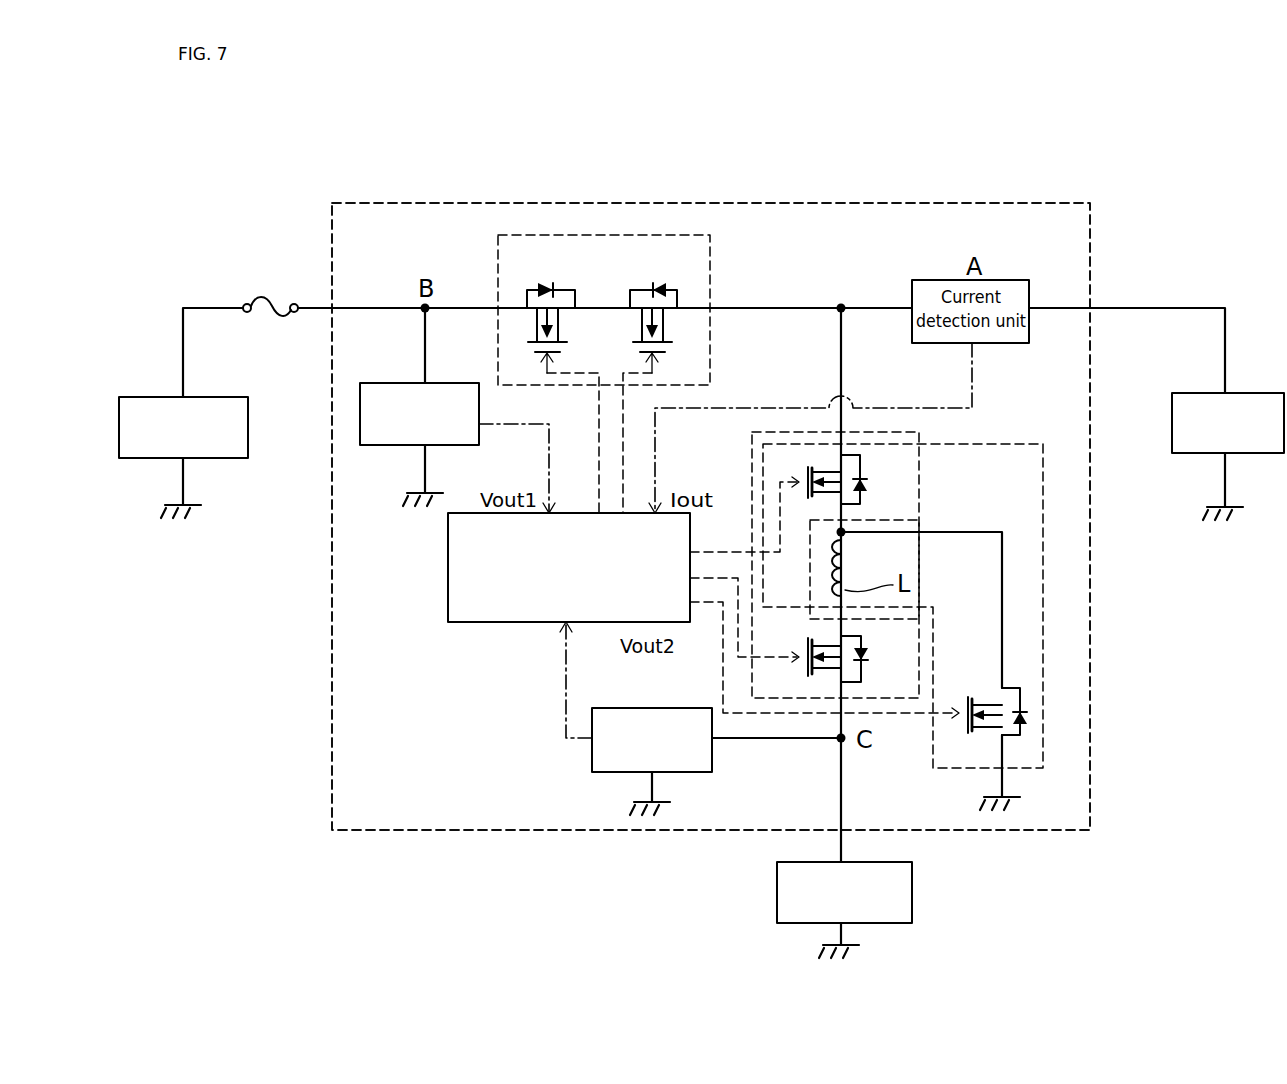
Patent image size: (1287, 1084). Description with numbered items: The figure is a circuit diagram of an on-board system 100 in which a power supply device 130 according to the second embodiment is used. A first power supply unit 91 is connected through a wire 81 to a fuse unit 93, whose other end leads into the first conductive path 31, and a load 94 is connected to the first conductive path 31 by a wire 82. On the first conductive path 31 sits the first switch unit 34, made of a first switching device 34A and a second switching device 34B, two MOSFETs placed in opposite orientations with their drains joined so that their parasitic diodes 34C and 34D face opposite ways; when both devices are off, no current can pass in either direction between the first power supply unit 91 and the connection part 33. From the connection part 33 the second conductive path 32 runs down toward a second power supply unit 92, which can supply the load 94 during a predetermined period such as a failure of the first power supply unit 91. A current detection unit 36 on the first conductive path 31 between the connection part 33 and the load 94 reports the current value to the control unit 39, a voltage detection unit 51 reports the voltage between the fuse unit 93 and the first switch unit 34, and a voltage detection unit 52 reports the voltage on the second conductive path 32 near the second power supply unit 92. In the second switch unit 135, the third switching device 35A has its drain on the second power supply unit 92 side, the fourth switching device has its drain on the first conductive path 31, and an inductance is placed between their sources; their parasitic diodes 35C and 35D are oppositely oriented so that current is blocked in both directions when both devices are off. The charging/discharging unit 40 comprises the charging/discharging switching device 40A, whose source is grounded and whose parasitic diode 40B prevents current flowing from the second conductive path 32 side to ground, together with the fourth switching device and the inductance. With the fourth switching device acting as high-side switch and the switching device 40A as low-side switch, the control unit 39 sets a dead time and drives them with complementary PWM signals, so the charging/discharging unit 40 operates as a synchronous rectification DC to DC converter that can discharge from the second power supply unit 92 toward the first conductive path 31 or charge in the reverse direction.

The on-board system 100 is at (1118, 192).
The power supply device 130 is at (857, 203).
The first power supply unit 91 is at (141, 396).
The second power supply unit 92 is at (912, 890).
The fuse unit 93 is at (265, 296).
The load 94 is at (1243, 392).
The wire 81 is at (213, 307).
The wire 82 is at (1170, 307).
The first conductive path 31 is at (465, 307).
The second conductive path 32 is at (845, 368).
The connection part 33 is at (840, 306).
The first switch unit 34 is at (593, 245).
The first switching device 34A is at (559, 258).
The second switching device 34B is at (657, 258).
The parasitic diode 34C is at (542, 286).
The parasitic diode 34D is at (657, 288).
The second switch unit 135 is at (752, 457).
The third switching device 35A is at (885, 461).
The parasitic diode 35C is at (867, 653).
The parasitic diode 35D is at (867, 485).
The current detection unit 36 is at (1000, 346).
The control unit 39 is at (495, 624).
The charging/discharging unit 40 is at (1043, 568).
The charging/discharging switching device 40A is at (1027, 758).
The parasitic diode 40B is at (1024, 717).
The voltage detection unit 51 is at (387, 447).
The voltage detection unit 52 is at (592, 753).